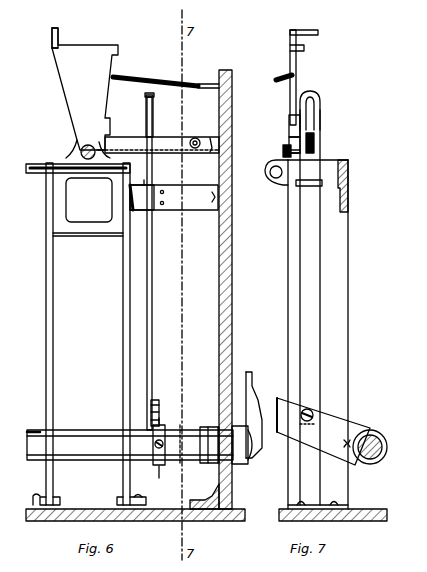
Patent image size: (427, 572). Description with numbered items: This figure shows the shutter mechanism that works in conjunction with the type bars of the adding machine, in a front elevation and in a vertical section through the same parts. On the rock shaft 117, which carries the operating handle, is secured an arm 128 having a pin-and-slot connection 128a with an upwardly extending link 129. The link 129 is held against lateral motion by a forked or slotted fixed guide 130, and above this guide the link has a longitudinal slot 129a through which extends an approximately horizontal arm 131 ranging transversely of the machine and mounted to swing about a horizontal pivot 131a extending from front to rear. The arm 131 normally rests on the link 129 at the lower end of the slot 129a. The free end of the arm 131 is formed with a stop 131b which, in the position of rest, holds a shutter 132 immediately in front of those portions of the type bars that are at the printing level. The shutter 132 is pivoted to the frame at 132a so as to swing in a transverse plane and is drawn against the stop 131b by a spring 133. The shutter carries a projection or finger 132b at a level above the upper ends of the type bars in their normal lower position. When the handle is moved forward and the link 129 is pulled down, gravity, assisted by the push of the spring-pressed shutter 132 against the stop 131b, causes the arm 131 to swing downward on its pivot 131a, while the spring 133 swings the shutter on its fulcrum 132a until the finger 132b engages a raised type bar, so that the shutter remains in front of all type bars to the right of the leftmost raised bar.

In FIG. 6, the rock shaft 117 is at (80, 428).
In FIG. 7, the rock shaft 117 is at (382, 458).
In FIG. 6, the arm 128 is at (146, 460).
In FIG. 7, the arm 128 is at (342, 421).
In FIG. 6, the pin-and-slot connection 128a is at (160, 415).
In FIG. 7, the pin-and-slot connection 128a is at (314, 413).
In FIG. 6, the link 129 is at (151, 306).
In FIG. 7, the link 129 is at (310, 344).
In FIG. 7, the longitudinal slot 129a is at (318, 118).
In FIG. 6, the forked or slotted fixed guide 130 is at (150, 184).
In FIG. 7, the forked or slotted fixed guide 130 is at (314, 183).
In FIG. 6, the horizontal arm 131 is at (158, 135).
In FIG. 7, the horizontal arm 131 is at (322, 144).
In FIG. 6, the horizontal pivot 131a is at (198, 135).
In FIG. 6, the stop 131b is at (142, 132).
In FIG. 7, the stop 131b is at (290, 126).
In FIG. 6, the shutter 132 is at (118, 60).
In FIG. 7, the shutter 132 is at (300, 57).
In FIG. 6, the shutter pivot 132a is at (76, 146).
In FIG. 7, the shutter pivot 132a is at (286, 149).
In FIG. 6, the projection or finger 132b is at (60, 31).
In FIG. 7, the projection or finger 132b is at (306, 26).
In FIG. 6, the spring 133 is at (160, 82).
In FIG. 7, the spring 133 is at (280, 76).